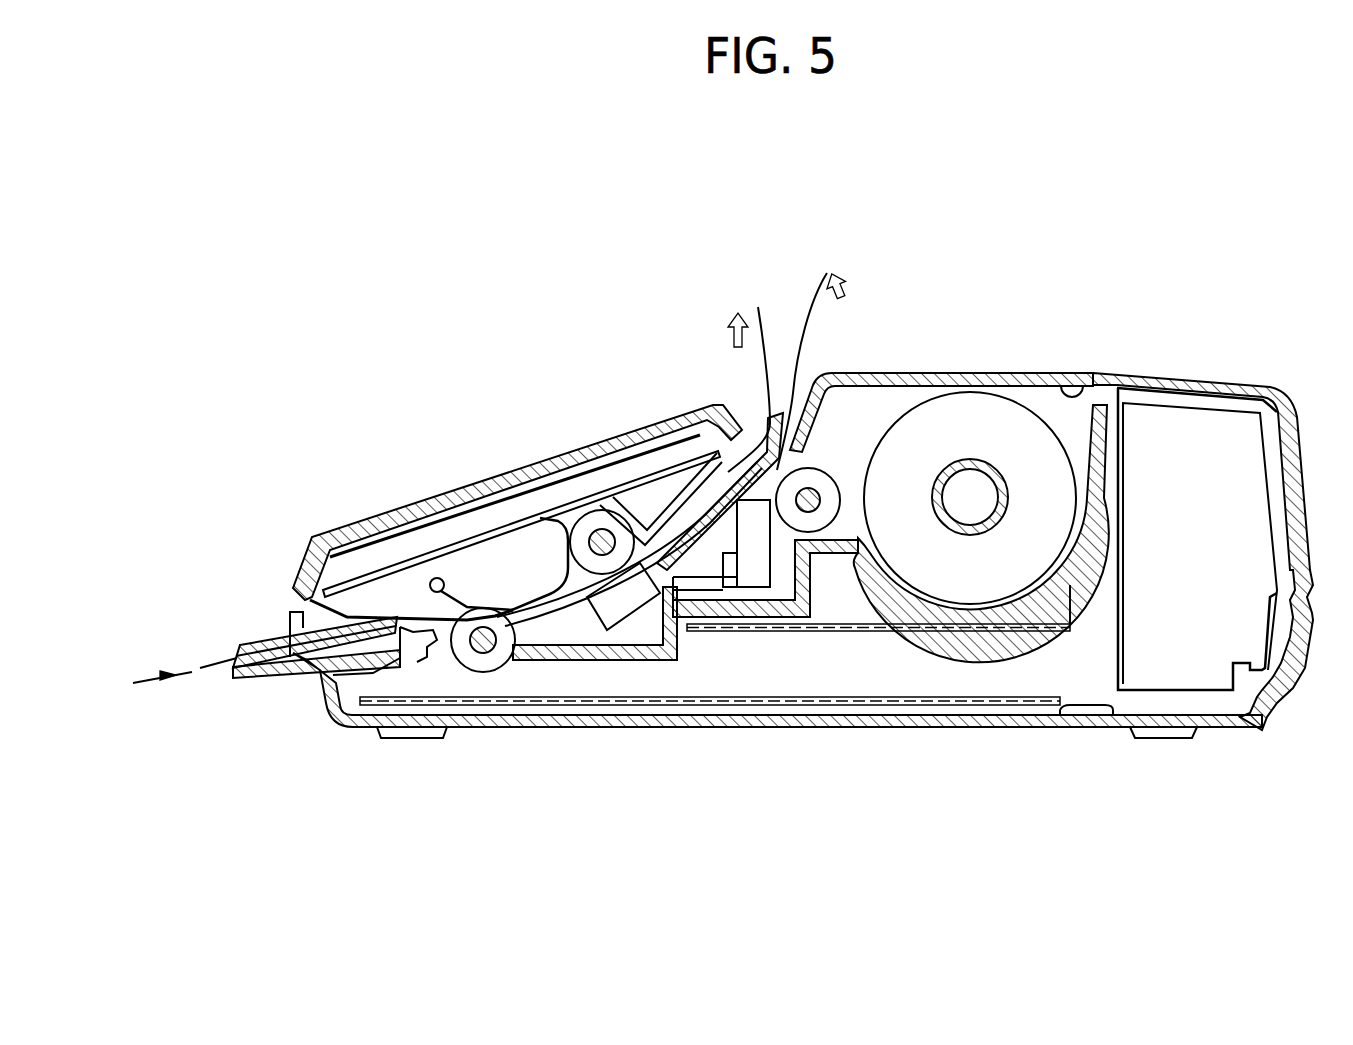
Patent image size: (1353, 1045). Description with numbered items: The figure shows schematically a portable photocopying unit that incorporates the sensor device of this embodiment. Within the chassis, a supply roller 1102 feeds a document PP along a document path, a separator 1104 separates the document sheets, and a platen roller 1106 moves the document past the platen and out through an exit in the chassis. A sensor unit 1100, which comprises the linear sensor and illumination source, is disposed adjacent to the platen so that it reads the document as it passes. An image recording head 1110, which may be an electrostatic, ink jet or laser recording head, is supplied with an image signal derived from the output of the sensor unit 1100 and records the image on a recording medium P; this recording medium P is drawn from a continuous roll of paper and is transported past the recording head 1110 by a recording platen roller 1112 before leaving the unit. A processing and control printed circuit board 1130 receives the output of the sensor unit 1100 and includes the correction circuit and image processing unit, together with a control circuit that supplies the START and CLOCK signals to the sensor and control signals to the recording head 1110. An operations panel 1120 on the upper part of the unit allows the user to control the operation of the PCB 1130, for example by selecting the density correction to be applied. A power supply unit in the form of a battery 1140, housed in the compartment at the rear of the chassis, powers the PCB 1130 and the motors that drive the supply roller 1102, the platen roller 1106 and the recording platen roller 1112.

The sensor unit 1100 is at (600, 637).
The supply roller 1102 is at (482, 662).
The separator 1104 is at (450, 590).
The platen roller 1106 is at (596, 533).
The image recording head 1110 is at (752, 590).
The recording platen roller 1112 is at (820, 465).
The operations panel 1120 is at (320, 545).
The processing and control printed circuit board (PCB) 1130 is at (945, 705).
The power supply unit (battery) 1140 is at (1177, 423).
The recording medium (paper roll) P is at (1117, 318).
The document PP is at (763, 390).